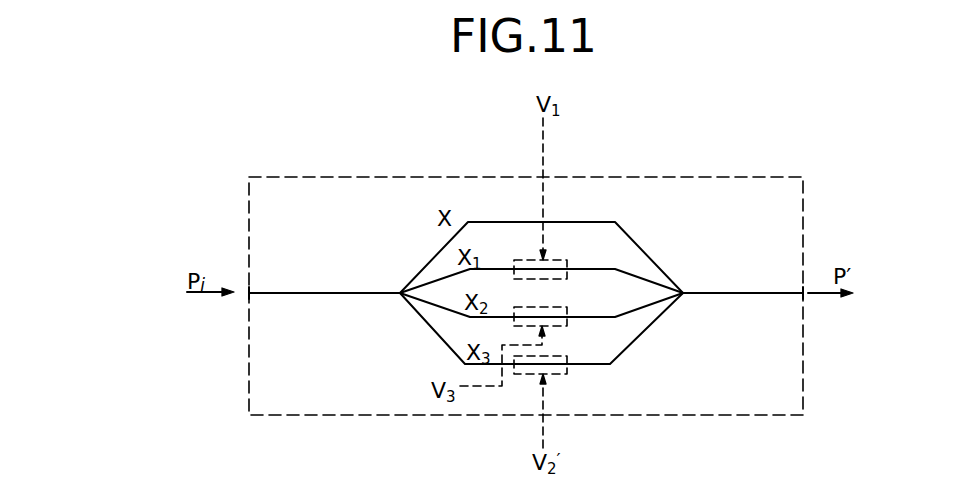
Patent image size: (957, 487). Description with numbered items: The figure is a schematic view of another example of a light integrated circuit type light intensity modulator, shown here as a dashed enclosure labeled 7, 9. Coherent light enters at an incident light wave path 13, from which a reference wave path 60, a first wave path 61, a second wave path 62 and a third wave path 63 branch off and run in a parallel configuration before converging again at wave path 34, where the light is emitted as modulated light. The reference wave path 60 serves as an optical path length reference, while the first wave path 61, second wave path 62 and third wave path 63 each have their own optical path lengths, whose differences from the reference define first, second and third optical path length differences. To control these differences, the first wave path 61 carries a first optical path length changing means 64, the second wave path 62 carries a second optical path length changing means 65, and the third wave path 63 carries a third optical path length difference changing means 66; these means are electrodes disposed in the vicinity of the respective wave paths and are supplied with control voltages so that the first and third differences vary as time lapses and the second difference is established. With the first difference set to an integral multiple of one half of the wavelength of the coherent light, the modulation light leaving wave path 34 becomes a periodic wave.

The optical modulator 7 is at (526, 255).
The optical modulator 9 is at (650, 177).
The incident light wave path 13 is at (347, 292).
The wave path 34 is at (735, 293).
The reference wave path 60 is at (516, 222).
The first wave path 61 is at (608, 263).
The second wave path 62 is at (617, 309).
The third wave path 63 is at (608, 365).
The first optical path length changing means 64 is at (558, 260).
The second optical path length changing means 65 is at (560, 326).
The third optical path length difference changing means 66 is at (530, 375).